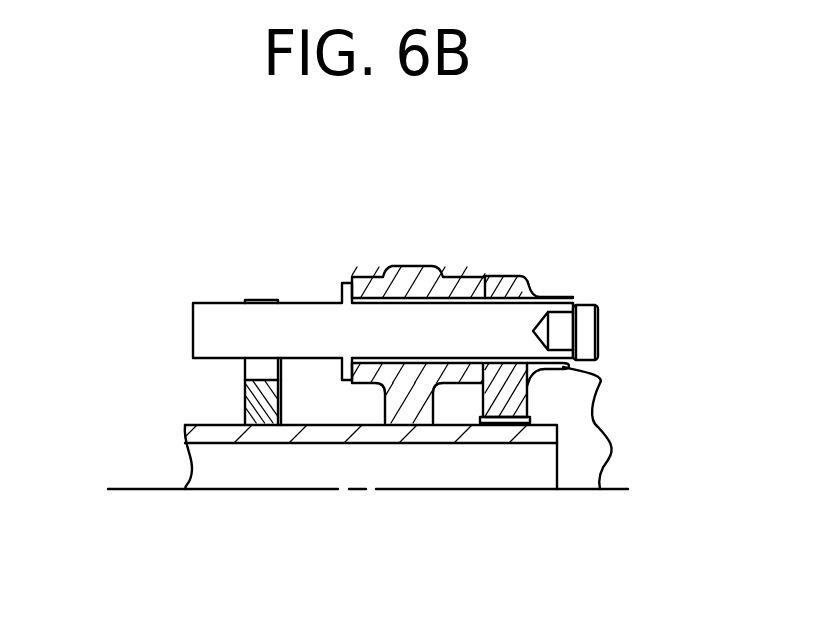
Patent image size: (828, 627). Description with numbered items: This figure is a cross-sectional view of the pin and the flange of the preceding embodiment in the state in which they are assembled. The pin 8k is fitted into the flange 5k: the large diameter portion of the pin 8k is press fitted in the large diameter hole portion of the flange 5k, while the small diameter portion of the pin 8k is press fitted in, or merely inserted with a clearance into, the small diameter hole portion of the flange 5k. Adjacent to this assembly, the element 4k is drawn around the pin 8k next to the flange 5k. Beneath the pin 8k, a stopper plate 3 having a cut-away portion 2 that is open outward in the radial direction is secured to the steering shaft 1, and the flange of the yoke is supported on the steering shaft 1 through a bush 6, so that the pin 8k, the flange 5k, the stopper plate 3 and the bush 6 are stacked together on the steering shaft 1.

The pin 8k is at (315, 303).
The nut 4k is at (405, 266).
The flange 5k is at (507, 277).
The cut-away portion 2 is at (253, 377).
The stopper plate 3 is at (252, 405).
The steering shaft 1 is at (210, 421).
The bush 6 is at (497, 427).